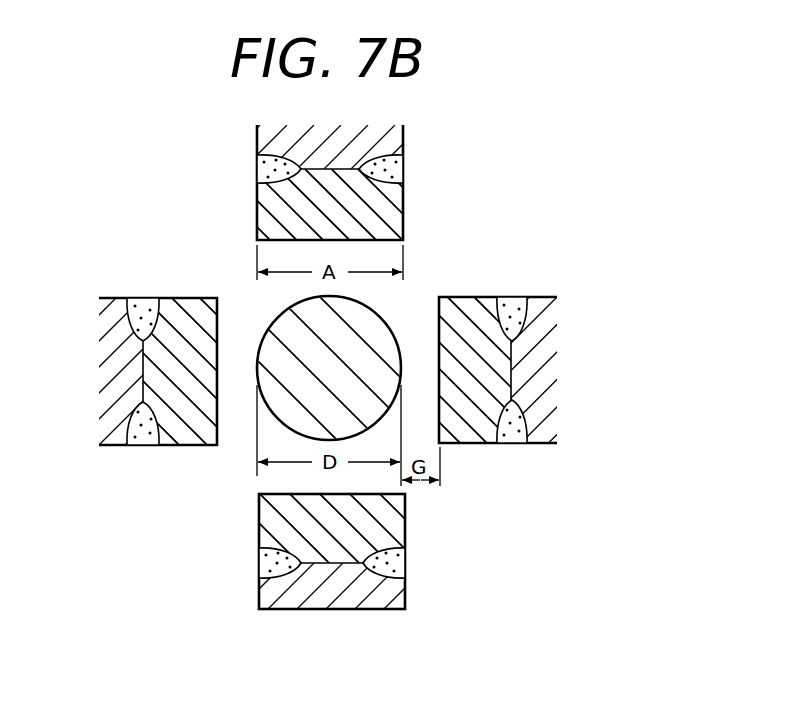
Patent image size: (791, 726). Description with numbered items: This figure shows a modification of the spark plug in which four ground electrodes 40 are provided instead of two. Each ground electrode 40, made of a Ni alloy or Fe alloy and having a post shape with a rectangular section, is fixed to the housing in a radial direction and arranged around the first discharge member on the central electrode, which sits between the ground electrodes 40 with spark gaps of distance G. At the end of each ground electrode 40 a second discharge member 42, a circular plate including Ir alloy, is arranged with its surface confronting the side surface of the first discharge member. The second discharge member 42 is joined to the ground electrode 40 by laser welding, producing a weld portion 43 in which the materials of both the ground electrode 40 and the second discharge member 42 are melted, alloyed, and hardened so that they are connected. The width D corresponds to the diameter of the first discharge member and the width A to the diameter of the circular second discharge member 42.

The ground electrode 40 is at (403, 138).
The second discharge member 42 is at (403, 207).
The weld portion 43 is at (403, 170).